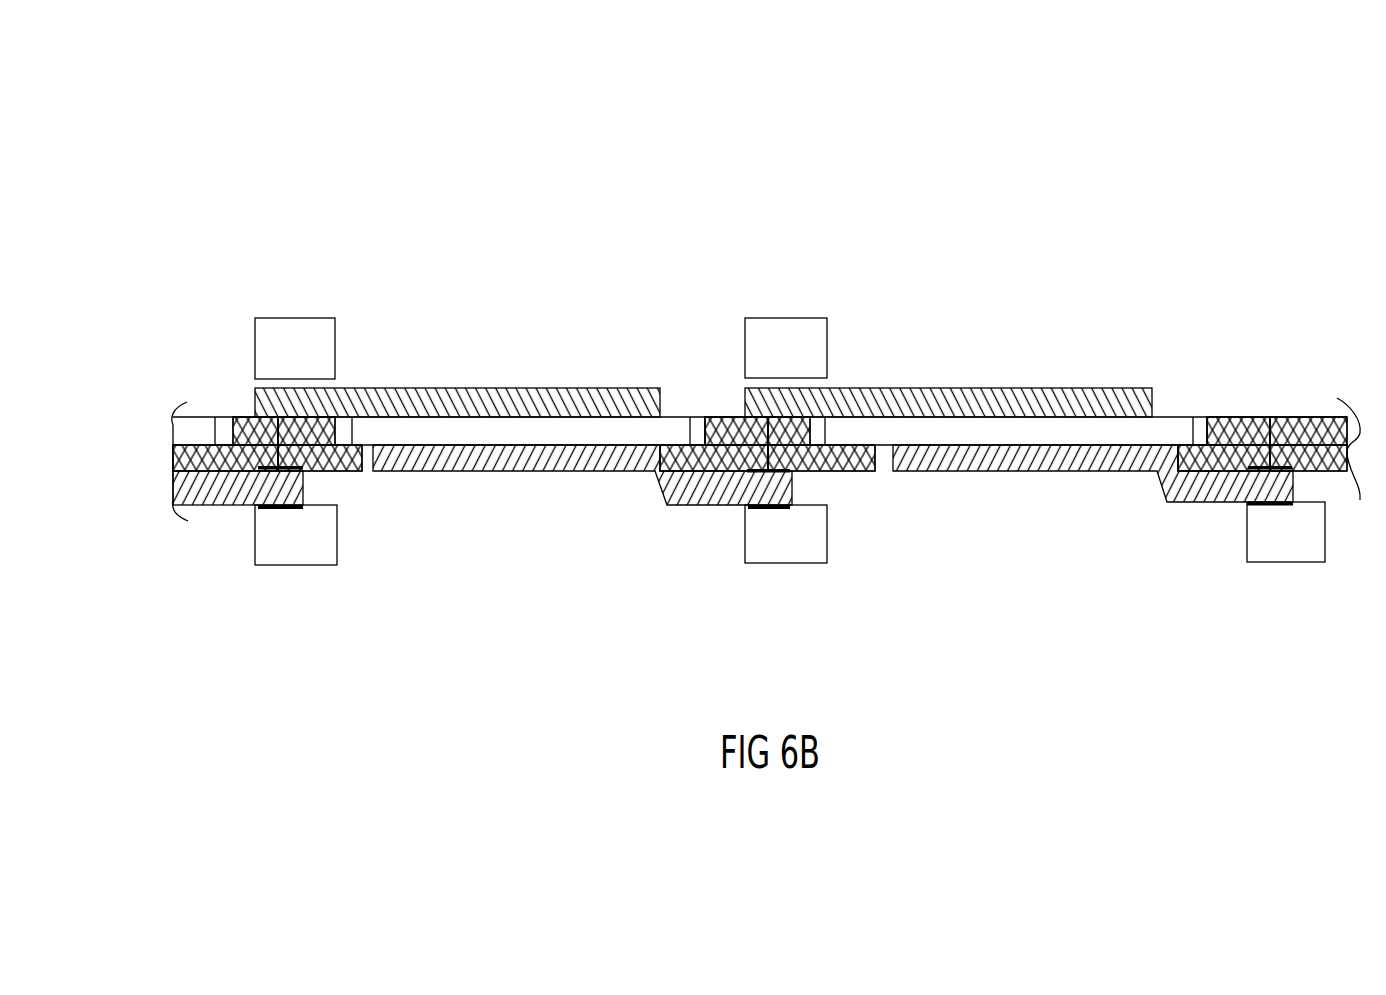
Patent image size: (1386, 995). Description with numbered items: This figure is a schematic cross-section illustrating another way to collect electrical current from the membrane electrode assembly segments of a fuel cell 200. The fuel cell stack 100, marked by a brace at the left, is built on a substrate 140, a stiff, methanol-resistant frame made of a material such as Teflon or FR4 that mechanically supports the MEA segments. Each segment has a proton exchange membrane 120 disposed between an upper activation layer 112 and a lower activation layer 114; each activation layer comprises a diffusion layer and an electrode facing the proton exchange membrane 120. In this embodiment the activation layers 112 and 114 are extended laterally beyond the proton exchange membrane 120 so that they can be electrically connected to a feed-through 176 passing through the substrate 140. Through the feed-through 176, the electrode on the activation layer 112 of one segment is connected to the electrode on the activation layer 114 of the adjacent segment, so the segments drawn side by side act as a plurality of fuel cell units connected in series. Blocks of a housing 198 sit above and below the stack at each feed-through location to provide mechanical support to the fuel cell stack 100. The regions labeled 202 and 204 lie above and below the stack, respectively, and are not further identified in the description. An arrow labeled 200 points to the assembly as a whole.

The fuel cell stack 100 is at (150, 373).
The activation layer 112 is at (422, 388).
The activation layer 114 is at (550, 453).
The proton exchange membrane 120 is at (473, 428).
The substrate 140 is at (330, 447).
The feed-through 176 is at (277, 413).
The housing 198 is at (787, 348).
The fuel cell 200 is at (780, 158).
The first side 202 is at (353, 243).
The second side 204 is at (353, 729).